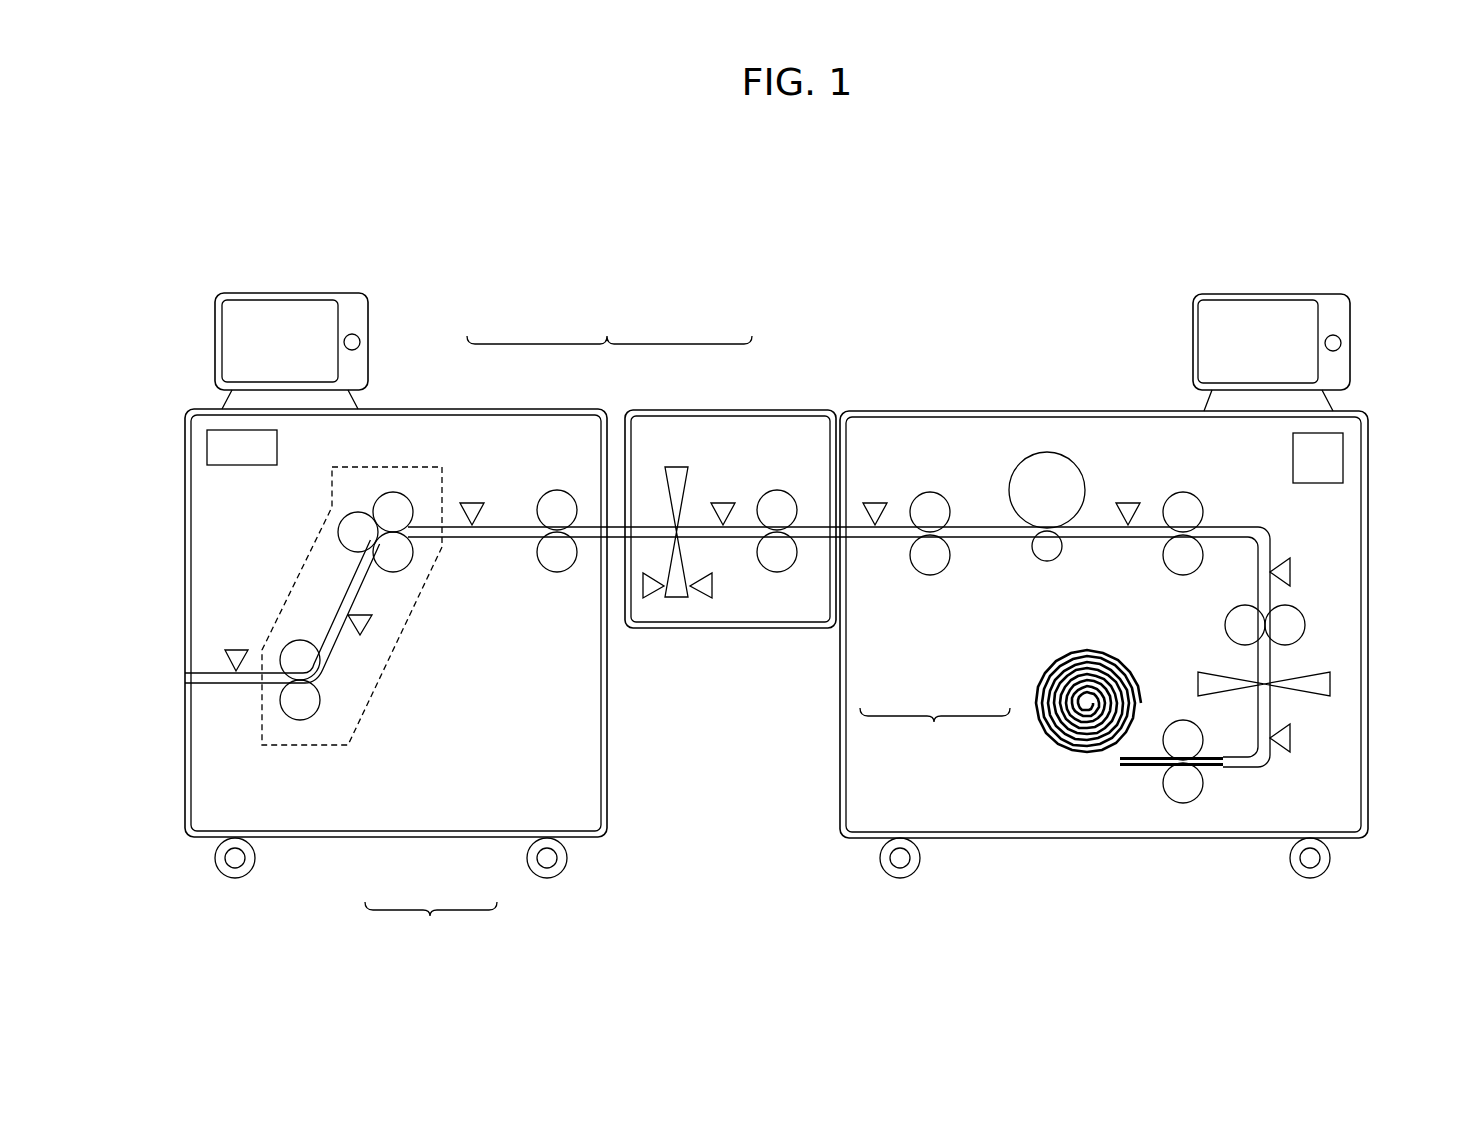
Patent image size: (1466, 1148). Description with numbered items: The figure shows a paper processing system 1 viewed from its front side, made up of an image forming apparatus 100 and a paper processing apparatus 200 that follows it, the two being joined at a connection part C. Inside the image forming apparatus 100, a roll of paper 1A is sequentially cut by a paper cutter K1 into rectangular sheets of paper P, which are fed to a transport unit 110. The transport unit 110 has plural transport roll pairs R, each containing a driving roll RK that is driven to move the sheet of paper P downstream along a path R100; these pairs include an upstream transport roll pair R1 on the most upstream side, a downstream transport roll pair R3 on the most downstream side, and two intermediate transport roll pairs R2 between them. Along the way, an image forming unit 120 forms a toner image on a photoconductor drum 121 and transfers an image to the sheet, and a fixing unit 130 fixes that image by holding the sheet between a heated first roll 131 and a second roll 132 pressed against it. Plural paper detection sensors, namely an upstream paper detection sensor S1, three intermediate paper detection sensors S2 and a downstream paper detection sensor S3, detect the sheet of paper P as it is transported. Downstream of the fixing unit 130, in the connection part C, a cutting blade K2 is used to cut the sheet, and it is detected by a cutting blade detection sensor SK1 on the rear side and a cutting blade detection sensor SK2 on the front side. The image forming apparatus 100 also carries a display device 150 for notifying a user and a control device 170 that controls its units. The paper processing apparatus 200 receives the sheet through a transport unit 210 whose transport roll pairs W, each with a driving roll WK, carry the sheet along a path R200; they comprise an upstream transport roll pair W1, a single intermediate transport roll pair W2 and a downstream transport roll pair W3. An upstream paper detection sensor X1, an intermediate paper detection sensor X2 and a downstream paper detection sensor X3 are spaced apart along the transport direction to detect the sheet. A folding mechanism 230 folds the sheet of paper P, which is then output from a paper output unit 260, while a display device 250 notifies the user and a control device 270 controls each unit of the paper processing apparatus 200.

The paper processing system 1 is at (1064, 241).
The roll of paper 1A is at (1050, 775).
The image forming apparatus 100 is at (1354, 272).
The transport unit 110 is at (935, 731).
The image forming unit 120 is at (1041, 437).
The photoconductor drum 121 is at (1068, 458).
The fixing unit 130 is at (949, 468).
The first roll 131 is at (950, 500).
The second roll 132 is at (920, 568).
The display device 150 is at (1350, 330).
The control device 170 is at (1343, 458).
The paper processing apparatus 200 is at (212, 252).
The transport unit 210 is at (431, 924).
The folding mechanism 230 is at (295, 575).
The display device 250 is at (318, 293).
The paper output unit 260 is at (170, 680).
The control device 270 is at (216, 430).
The connection part C is at (651, 466).
The paper cutter K1 is at (1330, 684).
The cutting blade K2 is at (677, 600).
The sheet of paper P is at (1080, 764).
The transport roll pairs R is at (810, 596).
The upstream transport roll pair R1 is at (1189, 825).
The intermediate transport roll pairs R2 is at (1184, 468).
The downstream transport roll pair R3 is at (796, 478).
The path R100 is at (762, 490).
The path R200 is at (508, 527).
The driving roll RK is at (776, 575).
The upstream paper detection sensor S1 is at (1292, 738).
The intermediate paper detection sensors S2 is at (876, 500).
The downstream paper detection sensor S3 is at (723, 500).
The cutting blade detection sensor SK1 is at (705, 600).
The cutting blade detection sensor SK2 is at (655, 600).
The transport roll pairs W is at (330, 718).
The upstream transport roll pair W1 is at (522, 561).
The intermediate transport roll pair W2 is at (365, 492).
The downstream transport roll pair W3 is at (272, 640).
The driving roll WK is at (302, 721).
The upstream paper detection sensor X1 is at (471, 500).
The intermediate paper detection sensor X2 is at (362, 612).
The downstream paper detection sensor X3 is at (226, 660).